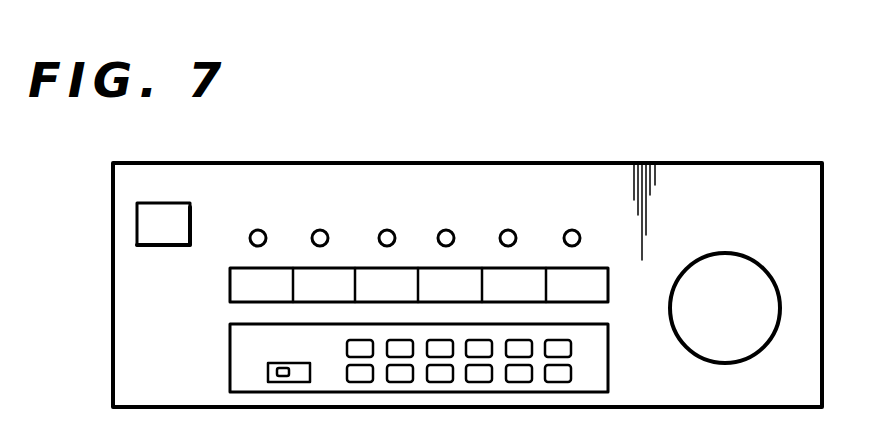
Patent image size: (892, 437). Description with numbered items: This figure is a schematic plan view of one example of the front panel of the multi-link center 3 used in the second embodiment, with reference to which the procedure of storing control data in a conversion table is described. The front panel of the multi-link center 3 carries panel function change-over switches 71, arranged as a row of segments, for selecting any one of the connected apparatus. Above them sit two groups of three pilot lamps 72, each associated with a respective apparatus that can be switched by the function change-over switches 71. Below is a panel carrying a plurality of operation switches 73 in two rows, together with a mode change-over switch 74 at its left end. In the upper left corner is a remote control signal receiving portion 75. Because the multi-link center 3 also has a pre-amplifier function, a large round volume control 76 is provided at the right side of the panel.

The multi-link center 3 is at (735, 163).
The function change-over switches 71 is at (230, 282).
The pilot lamps 72 is at (264, 232).
The operation switches 73 is at (574, 333).
The mode change-over switch 74 is at (268, 372).
The remote control signal receiving portion 75 is at (190, 212).
The volume control 76 is at (728, 252).